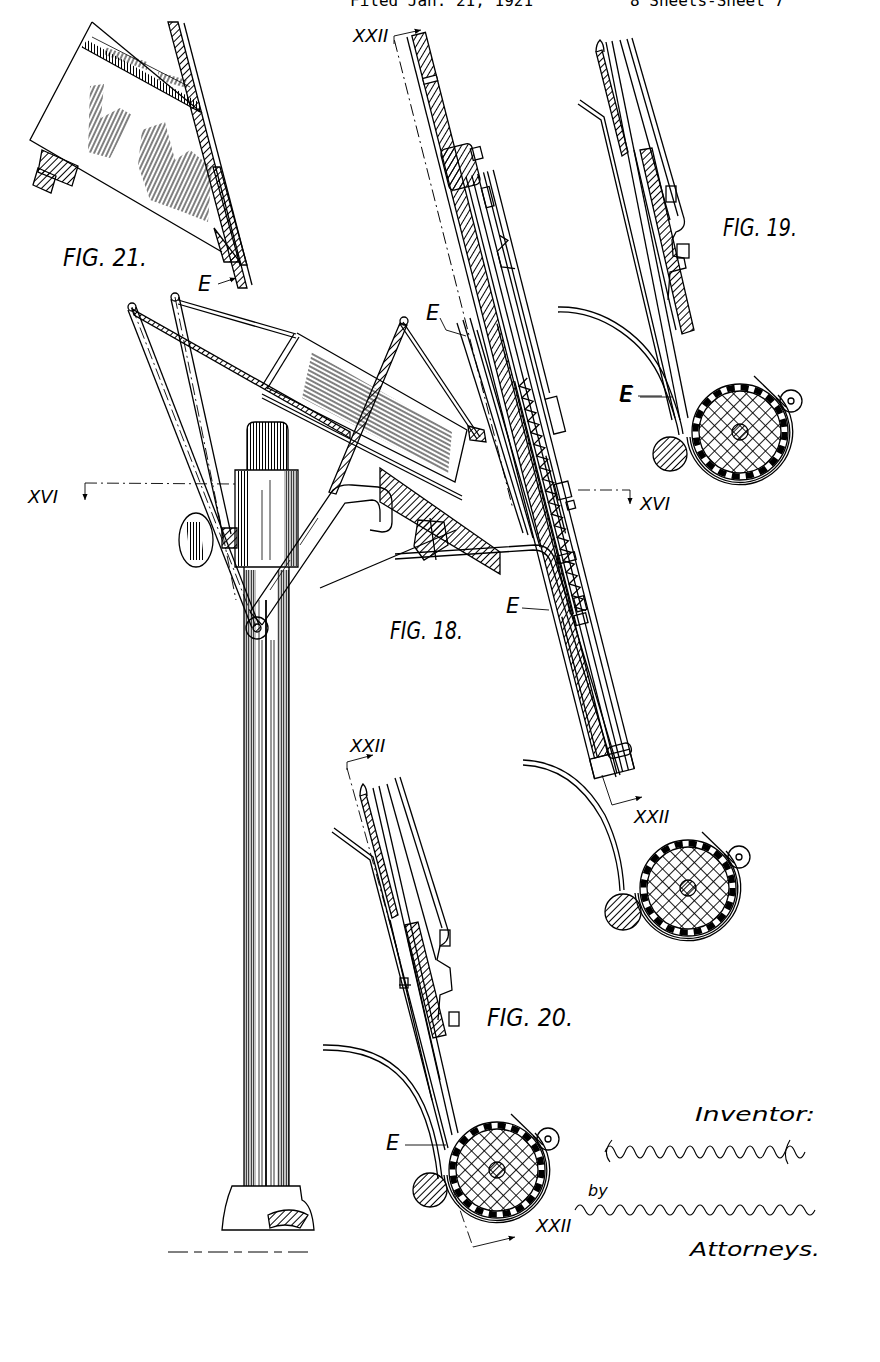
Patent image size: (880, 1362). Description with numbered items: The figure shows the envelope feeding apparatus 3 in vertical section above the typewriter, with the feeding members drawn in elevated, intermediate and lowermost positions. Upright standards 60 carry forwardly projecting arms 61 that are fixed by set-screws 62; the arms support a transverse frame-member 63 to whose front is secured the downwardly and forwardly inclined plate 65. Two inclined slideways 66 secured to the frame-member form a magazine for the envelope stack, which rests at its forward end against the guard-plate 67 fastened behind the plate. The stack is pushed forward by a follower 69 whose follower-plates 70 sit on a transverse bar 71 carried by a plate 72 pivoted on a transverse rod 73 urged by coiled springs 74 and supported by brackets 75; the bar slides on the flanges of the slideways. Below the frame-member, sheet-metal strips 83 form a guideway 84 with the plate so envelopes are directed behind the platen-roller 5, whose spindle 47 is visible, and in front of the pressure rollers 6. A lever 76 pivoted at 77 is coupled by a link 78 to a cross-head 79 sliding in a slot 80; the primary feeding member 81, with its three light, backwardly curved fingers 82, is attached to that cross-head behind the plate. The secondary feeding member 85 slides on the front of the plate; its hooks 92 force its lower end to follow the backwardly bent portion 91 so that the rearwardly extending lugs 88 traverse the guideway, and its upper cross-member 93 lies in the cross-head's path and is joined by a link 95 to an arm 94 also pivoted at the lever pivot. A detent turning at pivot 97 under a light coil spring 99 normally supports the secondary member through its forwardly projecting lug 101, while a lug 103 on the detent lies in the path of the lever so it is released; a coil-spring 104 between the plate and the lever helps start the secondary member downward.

In FIG. 19, the primary feeding apparatus 3 is at (657, 126).
In FIG. 20, the primary feeding apparatus 3 is at (438, 852).
In FIG. 18, the primary feeding apparatus 3 is at (515, 255).
In FIG. 19, the platen-roller 5 is at (733, 392).
In FIG. 20, the platen-roller 5 is at (490, 1130).
In FIG. 18, the platen-roller 5 is at (692, 848).
In FIG. 19, the pressure rollers 6 is at (656, 448).
In FIG. 20, the pressure rollers 6 is at (413, 1190).
In FIG. 18, the pressure rollers 6 is at (614, 930).
In FIG. 19, the spindle 47 is at (748, 440).
In FIG. 20, the spindle 47 is at (505, 1170).
In FIG. 18, the spindle 47 is at (696, 893).
In FIG. 18, the upright standards 60 is at (243, 880).
In FIG. 18, the forwardly projecting arms 61 is at (345, 568).
In FIG. 18, the set-screws 62 is at (190, 566).
In FIG. 18, the transverse frame-member 63 is at (438, 554).
In FIG. 19, the inclined plate 65 is at (683, 295).
In FIG. 20, the inclined plate 65 is at (396, 852).
In FIG. 18, the inclined plate 65 is at (441, 97).
In FIG. 21, the slideways 66 is at (126, 137).
In FIG. 18, the slideways 66 is at (334, 362).
In FIG. 18, the guard-plate 67 is at (468, 306).
In FIG. 18, the follower 69 is at (166, 310).
In FIG. 18, the follower-plates 70 is at (265, 366).
In FIG. 18, the transverse bar 71 is at (250, 398).
In FIG. 18, the plate 72 is at (142, 345).
In FIG. 18, the transverse rod 73 is at (128, 310).
In FIG. 18, the coiled springs 74 is at (245, 620).
In FIG. 18, the brackets 75 is at (318, 528).
In FIG. 19, the lever 76 is at (657, 118).
In FIG. 20, the lever 76 is at (410, 800).
In FIG. 18, the lever 76 is at (537, 352).
In FIG. 18, the pivot 77 is at (553, 404).
In FIG. 19, the link 78 is at (685, 196).
In FIG. 20, the link 78 is at (462, 975).
In FIG. 18, the link 78 is at (512, 240).
In FIG. 19, the cross-head 79 is at (667, 186).
In FIG. 20, the cross-head 79 is at (455, 965).
In FIG. 18, the cross-head 79 is at (519, 255).
In FIG. 19, the slot 80 is at (636, 136).
In FIG. 20, the slot 80 is at (400, 888).
In FIG. 18, the slot 80 is at (516, 367).
In FIG. 19, the primary feeding member 81 is at (597, 70).
In FIG. 20, the primary feeding member 81 is at (390, 888).
In FIG. 18, the primary feeding member 81 is at (428, 114).
In FIG. 19, the fingers 82 is at (678, 345).
In FIG. 20, the fingers 82 is at (440, 1158).
In FIG. 18, the fingers 82 is at (531, 447).
In FIG. 19, the sheet-metal strips 83 is at (586, 108).
In FIG. 20, the sheet-metal strips 83 is at (334, 846).
In FIG. 18, the sheet-metal strips 83 is at (554, 612).
In FIG. 19, the guideway 84 is at (638, 220).
In FIG. 20, the guideway 84 is at (390, 922).
In FIG. 18, the guideway 84 is at (586, 672).
In FIG. 20, the secondary feeding member 85 is at (400, 985).
In FIG. 18, the secondary feeding member 85 is at (514, 305).
In FIG. 20, the rearwardly extending lugs 88 is at (395, 1002).
In FIG. 18, the rearwardly extending lugs 88 is at (578, 508).
In FIG. 19, the backwardly bent portion 91 is at (600, 52).
In FIG. 20, the backwardly bent portion 91 is at (372, 828).
In FIG. 18, the backwardly bent portion 91 is at (586, 572).
In FIG. 20, the hooks 92 is at (405, 962).
In FIG. 18, the hooks 92 is at (554, 468).
In FIG. 18, the upper cross-member 93 is at (452, 186).
In FIG. 18, the arm 94 is at (478, 195).
In FIG. 18, the link 95 is at (492, 226).
In FIG. 18, the detent pivot 97 is at (590, 616).
In FIG. 18, the light coil spring 99 is at (588, 596).
In FIG. 18, the forwardly projecting lug 101 is at (580, 500).
In FIG. 18, the forwardly projecting lug 103 is at (577, 484).
In FIG. 18, the coil-spring 104 is at (600, 546).